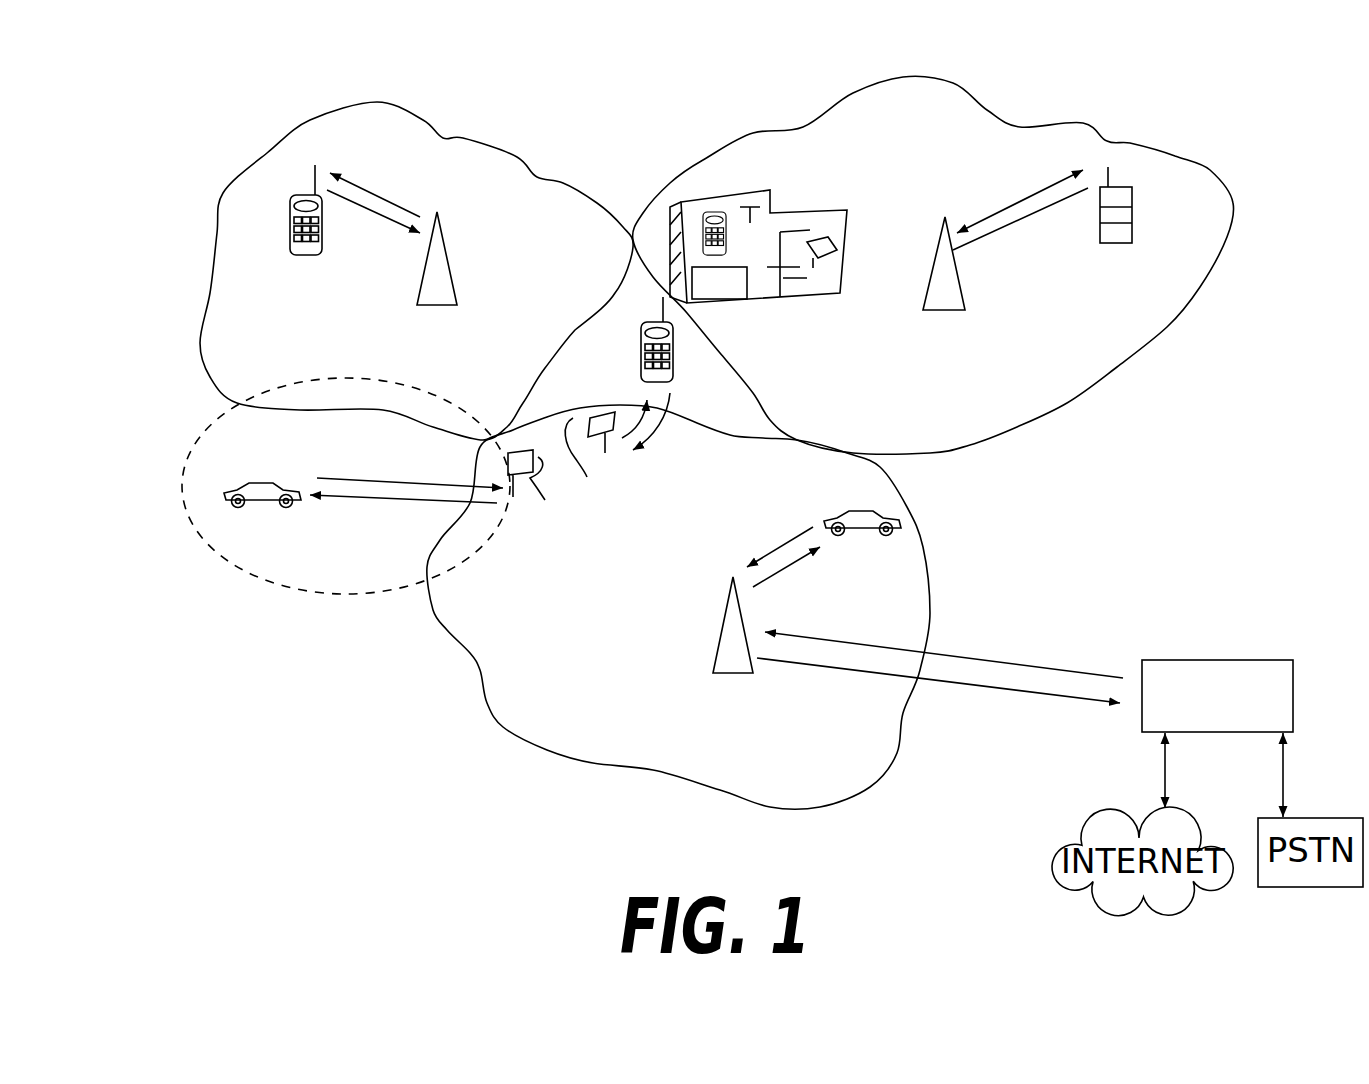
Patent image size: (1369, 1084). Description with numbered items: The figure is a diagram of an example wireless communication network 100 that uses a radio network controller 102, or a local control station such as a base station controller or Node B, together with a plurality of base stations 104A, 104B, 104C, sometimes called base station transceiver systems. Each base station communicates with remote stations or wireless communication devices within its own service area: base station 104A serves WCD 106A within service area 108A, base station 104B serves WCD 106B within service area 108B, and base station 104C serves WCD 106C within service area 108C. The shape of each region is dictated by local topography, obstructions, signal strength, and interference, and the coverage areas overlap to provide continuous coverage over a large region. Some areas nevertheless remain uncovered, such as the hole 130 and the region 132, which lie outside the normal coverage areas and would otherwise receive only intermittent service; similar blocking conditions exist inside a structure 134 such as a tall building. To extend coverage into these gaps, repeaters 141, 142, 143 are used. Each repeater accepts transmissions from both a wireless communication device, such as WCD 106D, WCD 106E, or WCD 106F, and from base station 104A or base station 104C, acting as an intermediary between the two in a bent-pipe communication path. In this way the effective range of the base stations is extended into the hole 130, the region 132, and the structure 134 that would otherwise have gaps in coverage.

The wireless communication network 100 is at (183, 165).
The radio network controller 102 is at (1218, 658).
The base station 104A is at (740, 680).
The base station 104B is at (445, 250).
The base station 104C is at (940, 313).
The wireless communication device 106A is at (850, 507).
The wireless communication device 106B is at (305, 258).
The wireless communication device 106C is at (1115, 245).
The wireless communication device 106D is at (253, 480).
The wireless communication device 106E is at (672, 358).
The wireless communication device 106F is at (720, 207).
The service area 108A is at (593, 763).
The service area 108B is at (443, 138).
The service area 108C is at (1229, 185).
The hole 130 is at (628, 359).
The uncovered region 132 is at (240, 570).
The structure 134 is at (785, 299).
The repeater 141 is at (538, 493).
The repeater 142 is at (617, 451).
The repeater 143 is at (826, 237).